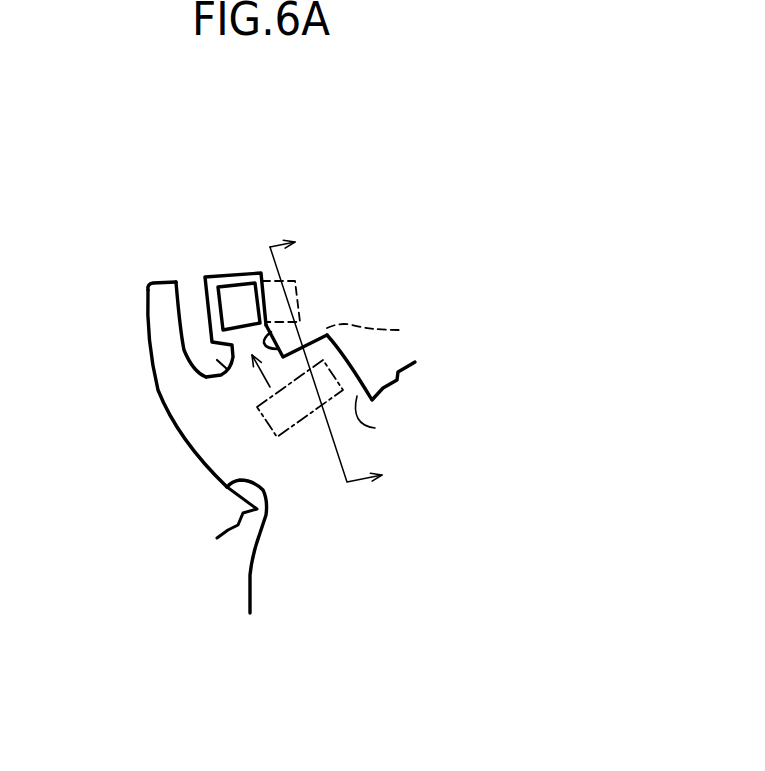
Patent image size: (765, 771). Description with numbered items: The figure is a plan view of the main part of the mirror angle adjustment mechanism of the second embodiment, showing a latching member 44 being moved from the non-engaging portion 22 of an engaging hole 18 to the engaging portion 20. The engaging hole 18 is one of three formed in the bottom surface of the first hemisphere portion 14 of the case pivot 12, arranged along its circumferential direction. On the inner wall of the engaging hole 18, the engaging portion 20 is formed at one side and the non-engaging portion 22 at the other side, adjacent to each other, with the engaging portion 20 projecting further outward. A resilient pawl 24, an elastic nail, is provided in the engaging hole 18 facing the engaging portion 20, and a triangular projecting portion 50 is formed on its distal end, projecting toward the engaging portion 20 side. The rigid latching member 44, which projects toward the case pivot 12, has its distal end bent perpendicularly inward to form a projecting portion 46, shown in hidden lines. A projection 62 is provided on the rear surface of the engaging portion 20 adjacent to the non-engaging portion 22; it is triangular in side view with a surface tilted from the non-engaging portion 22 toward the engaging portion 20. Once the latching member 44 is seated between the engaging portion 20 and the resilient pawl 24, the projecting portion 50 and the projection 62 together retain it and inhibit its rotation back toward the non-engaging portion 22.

The case pivot 12 is at (463, 258).
The first hemisphere portion 14 is at (209, 478).
The engaging hole 18 is at (158, 298).
The engaging portion 20 is at (270, 331).
The non-engaging portion 22 is at (375, 428).
The resilient pawl 24 is at (178, 351).
The latching member 44 is at (245, 276).
The projecting portion 46 is at (300, 318).
The projecting portion 50 is at (231, 378).
The projection 62 is at (392, 328).